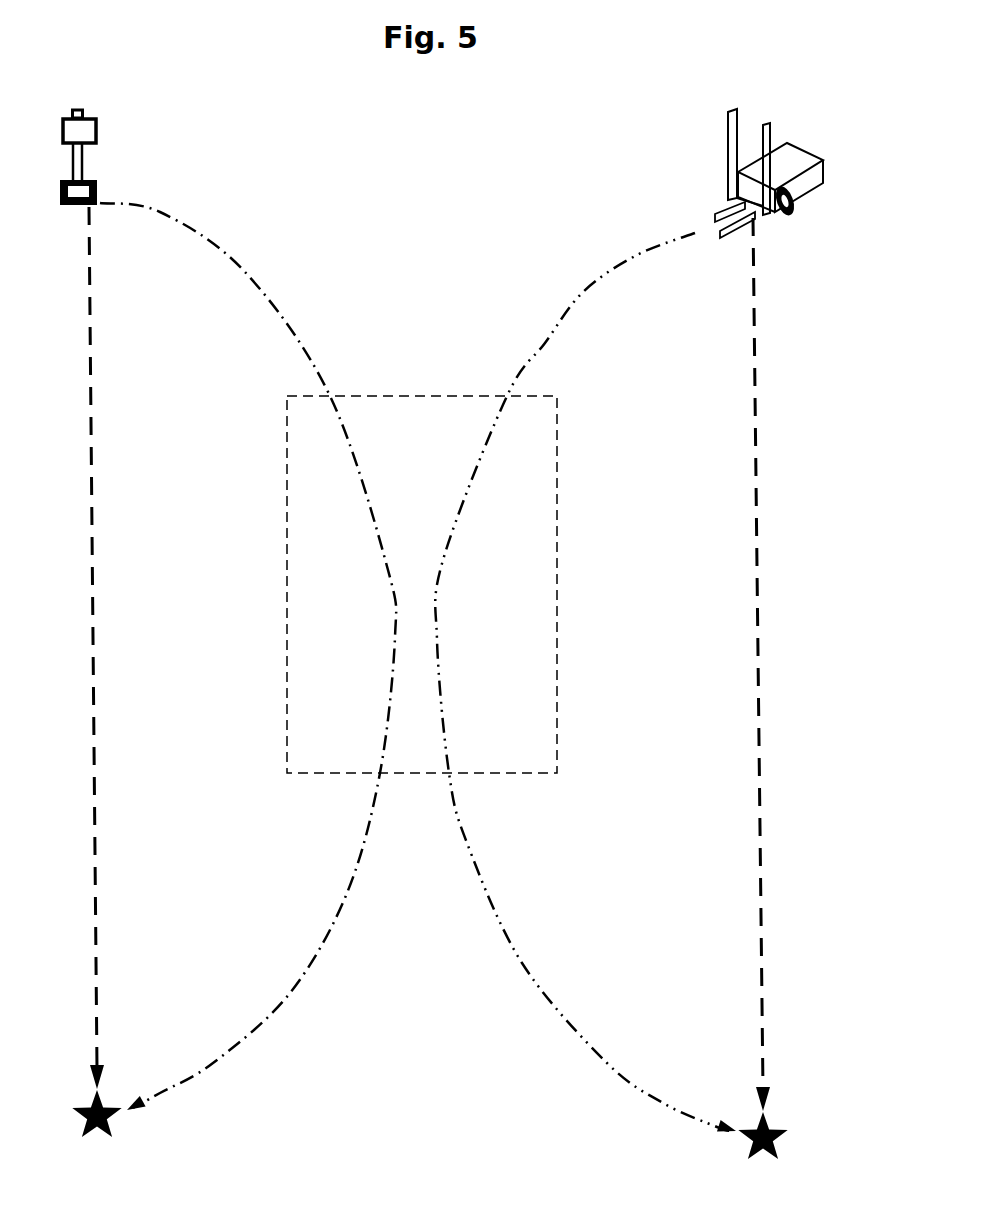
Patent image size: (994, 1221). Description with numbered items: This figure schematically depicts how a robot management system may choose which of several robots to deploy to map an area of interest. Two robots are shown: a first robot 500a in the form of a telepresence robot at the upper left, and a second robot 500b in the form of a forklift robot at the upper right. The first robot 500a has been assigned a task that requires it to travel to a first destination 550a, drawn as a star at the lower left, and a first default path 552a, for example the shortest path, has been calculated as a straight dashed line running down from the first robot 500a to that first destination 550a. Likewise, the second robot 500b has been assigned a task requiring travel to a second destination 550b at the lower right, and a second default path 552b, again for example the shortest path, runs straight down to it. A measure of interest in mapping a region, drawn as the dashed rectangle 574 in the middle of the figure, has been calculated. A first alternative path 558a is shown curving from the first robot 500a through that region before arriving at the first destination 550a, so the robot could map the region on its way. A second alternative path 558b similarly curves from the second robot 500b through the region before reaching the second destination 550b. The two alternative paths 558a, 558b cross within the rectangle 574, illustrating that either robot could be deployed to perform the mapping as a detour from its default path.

The first robot 500a is at (175, 118).
The second robot 500b is at (808, 115).
The first default path 552a is at (93, 575).
The second default path 552b is at (758, 595).
The first alternative path 558a is at (245, 272).
The second alternative path 558b is at (522, 960).
The area of potential conflict 574 is at (548, 428).
The first destination 550a is at (112, 1125).
The second destination 550b is at (778, 1153).